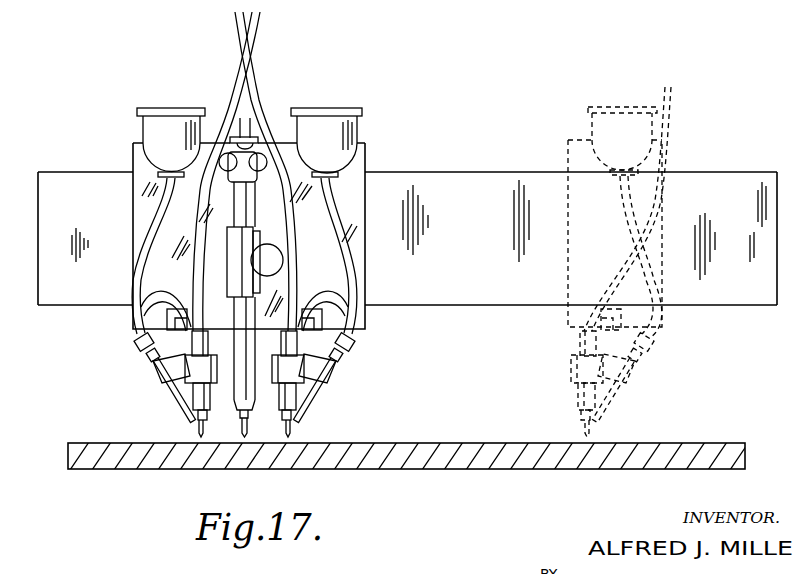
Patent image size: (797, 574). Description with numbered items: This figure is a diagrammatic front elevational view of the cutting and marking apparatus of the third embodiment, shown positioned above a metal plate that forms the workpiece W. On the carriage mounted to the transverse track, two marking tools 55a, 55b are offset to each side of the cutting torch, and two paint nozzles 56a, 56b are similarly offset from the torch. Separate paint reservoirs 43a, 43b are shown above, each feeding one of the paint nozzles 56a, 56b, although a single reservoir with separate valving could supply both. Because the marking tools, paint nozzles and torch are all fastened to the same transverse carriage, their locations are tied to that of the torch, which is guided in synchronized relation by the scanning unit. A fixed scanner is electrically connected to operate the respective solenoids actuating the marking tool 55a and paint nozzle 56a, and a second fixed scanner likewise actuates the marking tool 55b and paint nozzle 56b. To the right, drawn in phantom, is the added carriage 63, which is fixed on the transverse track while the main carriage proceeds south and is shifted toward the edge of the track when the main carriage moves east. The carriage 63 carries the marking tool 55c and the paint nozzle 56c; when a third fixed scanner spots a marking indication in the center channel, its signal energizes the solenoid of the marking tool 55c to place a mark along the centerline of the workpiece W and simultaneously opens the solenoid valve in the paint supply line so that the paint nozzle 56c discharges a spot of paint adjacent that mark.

The paint reservoir 43a is at (157, 119).
The paint reservoir 43b is at (312, 125).
The marking tool 55a is at (198, 428).
The marking tool 55b is at (290, 428).
The marking tool 55c is at (590, 423).
The paint nozzle 56a is at (173, 400).
The paint nozzle 56b is at (310, 403).
The paint nozzle 56c is at (613, 398).
The carriage 63 is at (568, 153).
The workpiece W is at (486, 441).